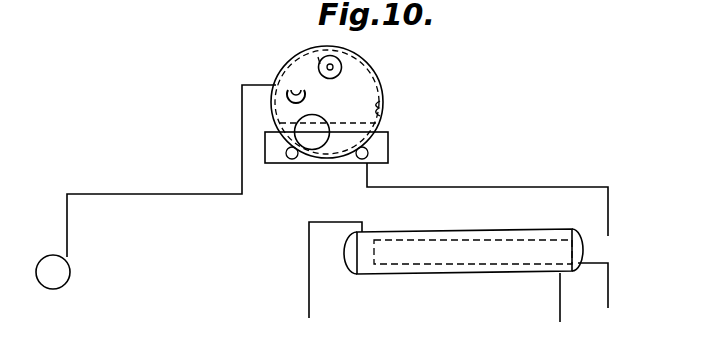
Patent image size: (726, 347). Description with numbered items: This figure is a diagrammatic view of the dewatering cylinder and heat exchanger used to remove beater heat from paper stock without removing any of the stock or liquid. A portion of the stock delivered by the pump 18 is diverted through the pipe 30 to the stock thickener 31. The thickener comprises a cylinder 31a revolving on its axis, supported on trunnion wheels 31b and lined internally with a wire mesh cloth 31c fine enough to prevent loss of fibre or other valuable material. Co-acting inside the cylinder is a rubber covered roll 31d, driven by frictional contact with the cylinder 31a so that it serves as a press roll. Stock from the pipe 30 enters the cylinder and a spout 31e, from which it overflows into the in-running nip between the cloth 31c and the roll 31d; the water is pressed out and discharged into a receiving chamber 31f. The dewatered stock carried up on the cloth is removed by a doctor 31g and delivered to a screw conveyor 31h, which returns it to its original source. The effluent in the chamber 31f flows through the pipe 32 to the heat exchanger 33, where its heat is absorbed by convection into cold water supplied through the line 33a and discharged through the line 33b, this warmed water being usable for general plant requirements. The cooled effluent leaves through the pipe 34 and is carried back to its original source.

The pump 18 is at (60, 281).
The pipe 30 is at (147, 193).
The stock thickener 31 is at (327, 102).
The cylinder 31a is at (382, 89).
The trunnion wheels 31b is at (291, 160).
The wire mesh cloth 31c is at (382, 108).
The rubber covered roll 31d is at (323, 133).
The spout 31e is at (293, 88).
The receiving chamber 31f is at (321, 163).
The doctor 31g is at (318, 58).
The screw conveyor 31h is at (338, 67).
The pipe 32 is at (468, 187).
The heat exchanger 33 is at (463, 251).
The line 33a is at (309, 284).
The line 33b is at (560, 298).
The pipe 34 is at (608, 293).